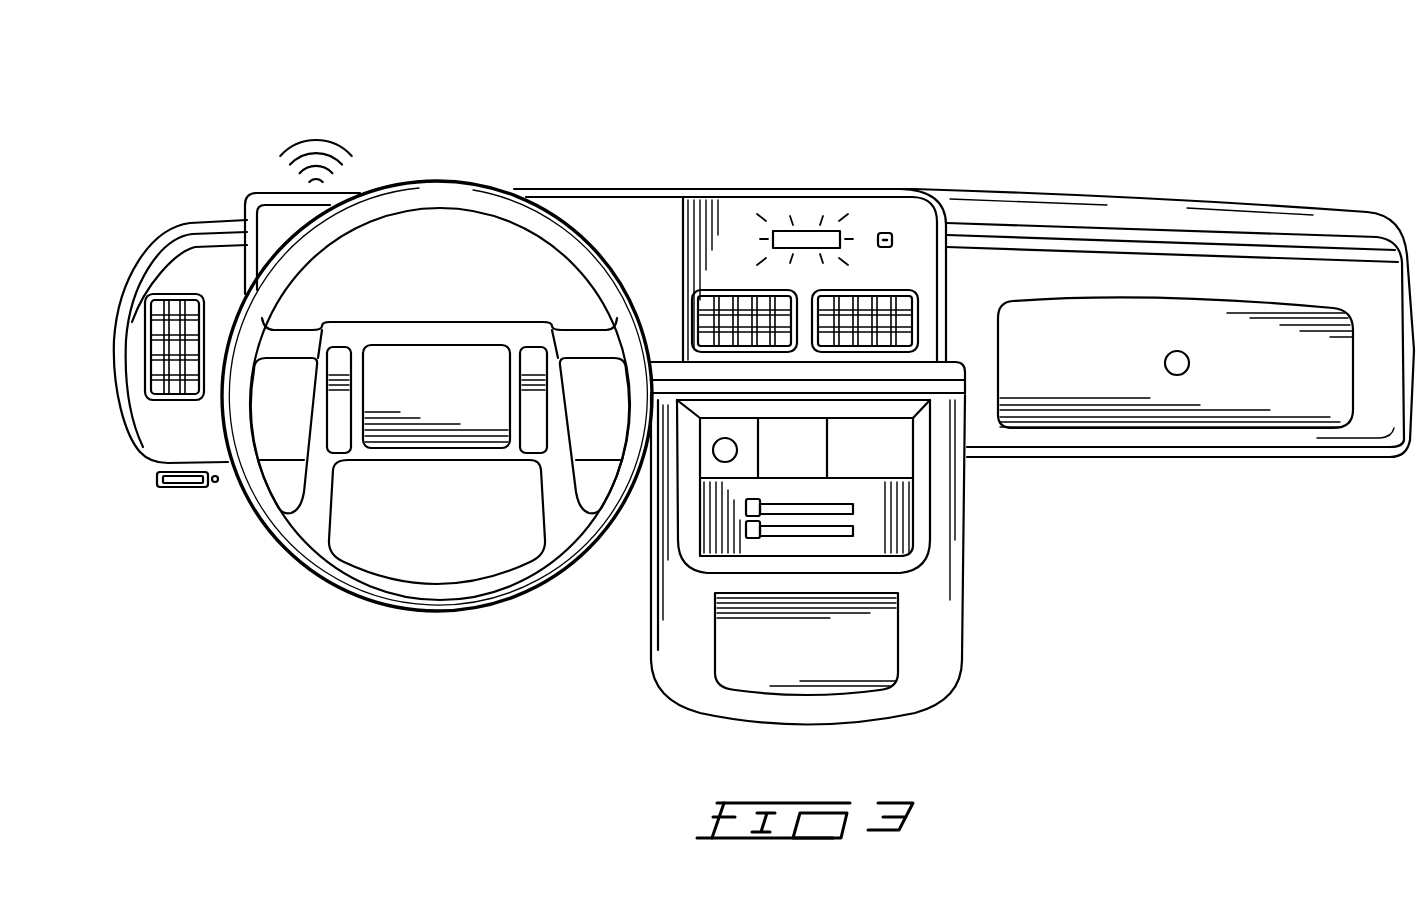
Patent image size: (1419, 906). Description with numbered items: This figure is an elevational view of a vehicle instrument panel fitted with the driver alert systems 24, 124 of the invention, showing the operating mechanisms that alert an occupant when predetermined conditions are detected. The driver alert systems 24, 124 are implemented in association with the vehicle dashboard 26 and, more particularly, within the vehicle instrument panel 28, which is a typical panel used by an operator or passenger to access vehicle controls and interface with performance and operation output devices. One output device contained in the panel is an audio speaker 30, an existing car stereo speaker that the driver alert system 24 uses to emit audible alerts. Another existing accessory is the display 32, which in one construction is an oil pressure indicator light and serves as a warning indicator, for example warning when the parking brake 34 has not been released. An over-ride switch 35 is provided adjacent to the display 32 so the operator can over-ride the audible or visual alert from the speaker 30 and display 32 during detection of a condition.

The driver alert system 24 is at (740, 322).
The driver alert system 124 is at (555, 100).
The vehicle dashboard 26 is at (1163, 196).
The vehicle instrument panel 28 is at (765, 116).
The audio speaker 30 is at (307, 193).
The display 32 is at (826, 230).
The parking brake 34 is at (168, 490).
The over-ride switch 35 is at (888, 232).